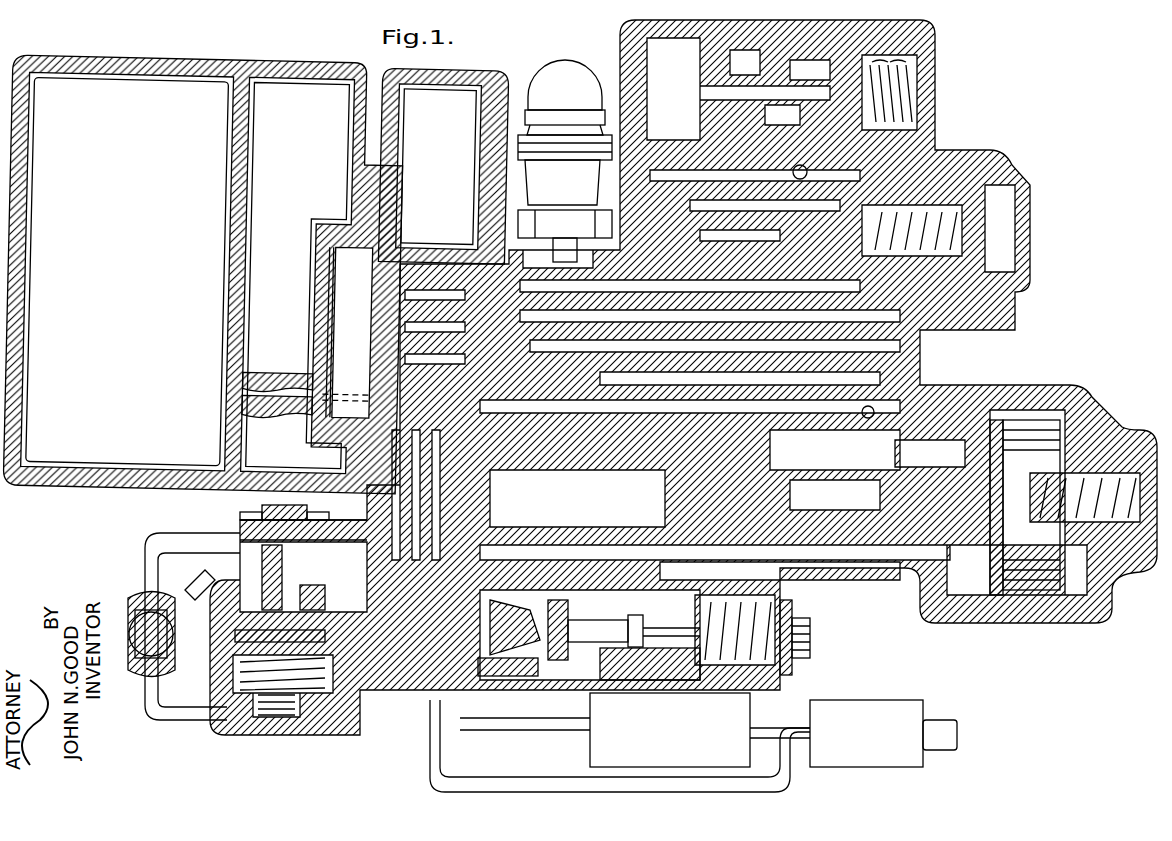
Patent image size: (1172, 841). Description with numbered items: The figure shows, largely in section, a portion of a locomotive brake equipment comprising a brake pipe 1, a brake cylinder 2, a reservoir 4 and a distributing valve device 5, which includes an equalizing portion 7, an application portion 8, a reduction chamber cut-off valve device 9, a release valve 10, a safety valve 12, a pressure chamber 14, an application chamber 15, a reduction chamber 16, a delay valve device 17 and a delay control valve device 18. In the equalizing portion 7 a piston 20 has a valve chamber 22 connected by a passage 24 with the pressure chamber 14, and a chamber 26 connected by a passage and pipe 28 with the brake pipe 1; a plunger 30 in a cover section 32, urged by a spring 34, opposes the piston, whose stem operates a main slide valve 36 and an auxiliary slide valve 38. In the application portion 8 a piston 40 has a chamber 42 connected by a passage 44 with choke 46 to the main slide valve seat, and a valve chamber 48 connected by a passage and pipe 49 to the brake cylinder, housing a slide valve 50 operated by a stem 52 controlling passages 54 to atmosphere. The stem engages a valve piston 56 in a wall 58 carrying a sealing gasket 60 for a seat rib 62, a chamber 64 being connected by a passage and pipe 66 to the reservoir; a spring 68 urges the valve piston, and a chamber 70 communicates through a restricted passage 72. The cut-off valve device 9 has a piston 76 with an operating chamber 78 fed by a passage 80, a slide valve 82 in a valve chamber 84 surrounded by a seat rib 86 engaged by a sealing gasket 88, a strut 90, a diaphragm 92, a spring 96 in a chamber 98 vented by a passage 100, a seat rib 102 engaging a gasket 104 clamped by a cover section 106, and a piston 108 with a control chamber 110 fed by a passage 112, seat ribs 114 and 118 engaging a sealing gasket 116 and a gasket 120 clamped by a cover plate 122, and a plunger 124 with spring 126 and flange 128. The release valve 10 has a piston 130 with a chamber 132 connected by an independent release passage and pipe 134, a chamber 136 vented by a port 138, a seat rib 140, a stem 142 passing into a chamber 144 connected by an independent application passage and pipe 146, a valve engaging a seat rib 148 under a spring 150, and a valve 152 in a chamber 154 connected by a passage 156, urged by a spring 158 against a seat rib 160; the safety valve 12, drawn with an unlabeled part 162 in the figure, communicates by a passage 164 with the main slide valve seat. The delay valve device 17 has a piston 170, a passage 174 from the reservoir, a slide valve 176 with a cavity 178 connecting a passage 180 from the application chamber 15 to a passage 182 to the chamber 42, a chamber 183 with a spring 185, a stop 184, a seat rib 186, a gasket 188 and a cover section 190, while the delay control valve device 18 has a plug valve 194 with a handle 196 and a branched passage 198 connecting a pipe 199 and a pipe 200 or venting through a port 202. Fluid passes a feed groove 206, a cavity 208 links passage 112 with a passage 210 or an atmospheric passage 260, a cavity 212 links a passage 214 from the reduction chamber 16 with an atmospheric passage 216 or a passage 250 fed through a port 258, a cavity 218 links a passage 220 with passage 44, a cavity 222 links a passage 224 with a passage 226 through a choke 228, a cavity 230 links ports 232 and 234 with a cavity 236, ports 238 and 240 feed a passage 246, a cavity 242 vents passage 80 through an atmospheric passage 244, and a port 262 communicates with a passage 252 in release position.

The brake pipe 1 is at (322, 760).
The brake cylinder 2 is at (868, 712).
The reservoir 4 is at (740, 706).
The distributing valve device 5 is at (912, 568).
The equalizing portion 7 is at (1138, 429).
The application portion 8 is at (800, 605).
The reduction chamber cut-off valve device 9 is at (1046, 274).
The release valve 10 is at (946, 87).
The safety valve 12 is at (565, 161).
The pressure chamber 14 is at (118, 91).
The application chamber 15 is at (299, 89).
The reduction chamber 16 is at (437, 85).
The delay valve device 17 is at (232, 730).
The delay control valve device 18 is at (200, 606).
The piston 20 is at (1075, 420).
The valve chamber 22 is at (965, 430).
The passage 24 is at (275, 398).
The chamber 26 is at (1100, 428).
The passage and pipe 28 is at (360, 735).
The plunger 30 is at (1082, 424).
The cover section 32 is at (1118, 452).
The spring 34 is at (1112, 575).
The main slide valve 36 is at (868, 465).
The auxiliary slide valve 38 is at (817, 501).
The piston 40 is at (589, 670).
The chamber 42 is at (521, 630).
The passage 44 is at (639, 398).
The choke 46 is at (415, 668).
The valve chamber 48 is at (564, 587).
The passage and pipe 49 is at (440, 782).
The slide valve 50 is at (634, 629).
The stem 52 is at (575, 622).
The passages 54 is at (608, 682).
The valve piston 56 is at (817, 573).
The wall 58 is at (790, 672).
The sealing gasket 60 is at (745, 600).
The seat rib 62 is at (712, 600).
The chamber 64 is at (690, 672).
The passage and pipe 66 is at (540, 730).
The spring 68 is at (810, 630).
The chamber 70 is at (782, 610).
The restricted passage 72 is at (787, 573).
The piston 76 is at (935, 108).
The operating chamber 78 is at (940, 128).
The passage 80 is at (928, 381).
The slide valve 82 is at (730, 240).
The valve chamber 84 is at (832, 193).
The seat rib 86 is at (762, 213).
The sealing gasket 88 is at (902, 130).
The strut 90 is at (807, 208).
The diaphragm 92 is at (722, 183).
The spring 96 is at (796, 133).
The chamber 98 is at (764, 133).
The passage 100 is at (818, 173).
The seat rib 102 is at (1008, 103).
The gasket 104 is at (916, 207).
The cover section 106 is at (963, 141).
The piston 108 is at (1008, 141).
The control chamber 110 is at (1015, 232).
The passage 112 is at (1000, 302).
The seat rib 114 is at (1015, 330).
The sealing gasket 116 is at (983, 348).
The seat rib 118 is at (1010, 322).
The gasket 120 is at (1018, 280).
The cover plate 122 is at (1018, 255).
The plunger 124 is at (1010, 172).
The spring 126 is at (1018, 210).
The flange 128 is at (1015, 195).
The piston 130 is at (648, 60).
The chamber 132 is at (558, 51).
The independent release passage and pipe 134 is at (345, 770).
The chamber 136 is at (740, 40).
The port 138 is at (758, 33).
The seat rib 140 is at (740, 60).
The stem 142 is at (756, 68).
The chamber 144 is at (694, 222).
The independent application passage and pipe 146 is at (380, 770).
The seat rib 148 is at (756, 108).
The spring 150 is at (862, 72).
The valve 152 is at (983, 35).
The chamber 154 is at (935, 62).
The passage 156 is at (837, 93).
The spring 158 is at (1008, 58).
The seat rib 160 is at (910, 40).
The passage 162 is at (696, 271).
The passage 164 is at (732, 343).
The piston 170 is at (233, 650).
The passage 174 is at (338, 540).
The slide valve 176 is at (272, 515).
The cavity 178 is at (280, 577).
The passage 180 is at (305, 600).
The passage 182 is at (325, 597).
The chamber 183 is at (232, 680).
The stop 184 is at (333, 621).
The spring 185 is at (304, 705).
The seat rib 186 is at (353, 650).
The gasket 188 is at (215, 710).
The cover section 190 is at (360, 705).
The plug valve 194 is at (135, 600).
The handle 196 is at (202, 578).
The branched passage 198 is at (148, 662).
The pipe 199 is at (175, 548).
The pipe 200 is at (150, 718).
The port 202 is at (135, 630).
The feed groove 206 is at (1010, 395).
The cavity 208 is at (808, 238).
The passage 210 is at (940, 386).
The cavity 212 is at (573, 459).
The passage 214 is at (509, 357).
The atmospheric passage 216 is at (553, 443).
The cavity 218 is at (803, 455).
The passage 220 is at (343, 300).
The cavity 222 is at (646, 448).
The passage 224 is at (766, 333).
The passage 226 is at (733, 333).
The choke 228 is at (693, 333).
The cavity 230 is at (700, 458).
The port 232 is at (580, 471).
The port 234 is at (818, 478).
The cavity 236 is at (718, 531).
The port 238 is at (680, 500).
The port 240 is at (585, 470).
The cavity 242 is at (848, 455).
The atmospheric passage 244 is at (923, 453).
The passage 246 is at (758, 498).
The passage 250 is at (698, 300).
The passage 252 is at (803, 331).
The port 258 is at (700, 240).
The atmospheric passage 260 is at (853, 223).
The port 262 is at (533, 470).